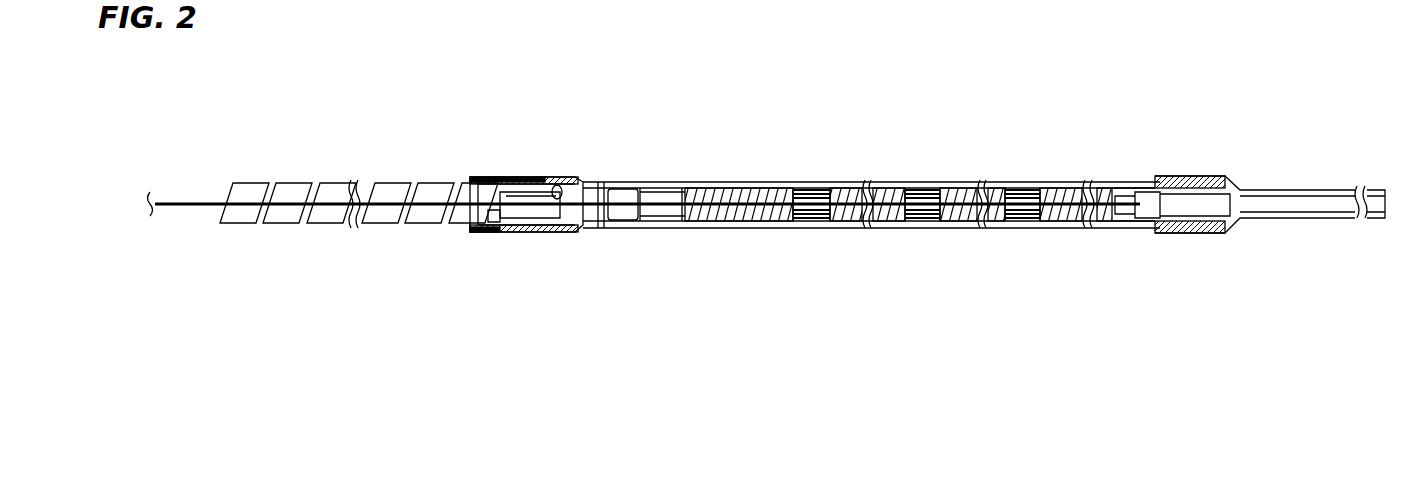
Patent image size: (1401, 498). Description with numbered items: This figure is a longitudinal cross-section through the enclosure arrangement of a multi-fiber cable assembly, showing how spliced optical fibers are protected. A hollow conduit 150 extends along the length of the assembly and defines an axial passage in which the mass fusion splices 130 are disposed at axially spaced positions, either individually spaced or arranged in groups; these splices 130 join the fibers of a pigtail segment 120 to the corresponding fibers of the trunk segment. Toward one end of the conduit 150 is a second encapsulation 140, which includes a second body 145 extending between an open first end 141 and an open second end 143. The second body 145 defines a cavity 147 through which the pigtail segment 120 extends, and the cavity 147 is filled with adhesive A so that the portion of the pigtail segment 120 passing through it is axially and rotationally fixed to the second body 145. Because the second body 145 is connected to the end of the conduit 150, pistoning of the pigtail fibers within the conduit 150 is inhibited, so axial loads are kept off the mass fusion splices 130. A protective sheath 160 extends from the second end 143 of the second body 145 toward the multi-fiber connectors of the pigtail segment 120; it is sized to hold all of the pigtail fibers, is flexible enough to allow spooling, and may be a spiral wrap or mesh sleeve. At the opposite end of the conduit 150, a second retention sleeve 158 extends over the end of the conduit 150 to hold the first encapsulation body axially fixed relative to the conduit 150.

The pigtail segment 120 is at (190, 197).
The protective sheath 160 is at (238, 224).
The second end of the second body 143 is at (470, 177).
The second body 145 is at (518, 172).
The cavity 147 is at (557, 178).
The adhesive A is at (527, 212).
The second encapsulation 140 is at (602, 178).
The first end of the second body 141 is at (688, 192).
The hollow conduit 150 is at (735, 232).
The mass fusion splice 130 is at (815, 190).
The second retention sleeve 158 is at (1180, 178).